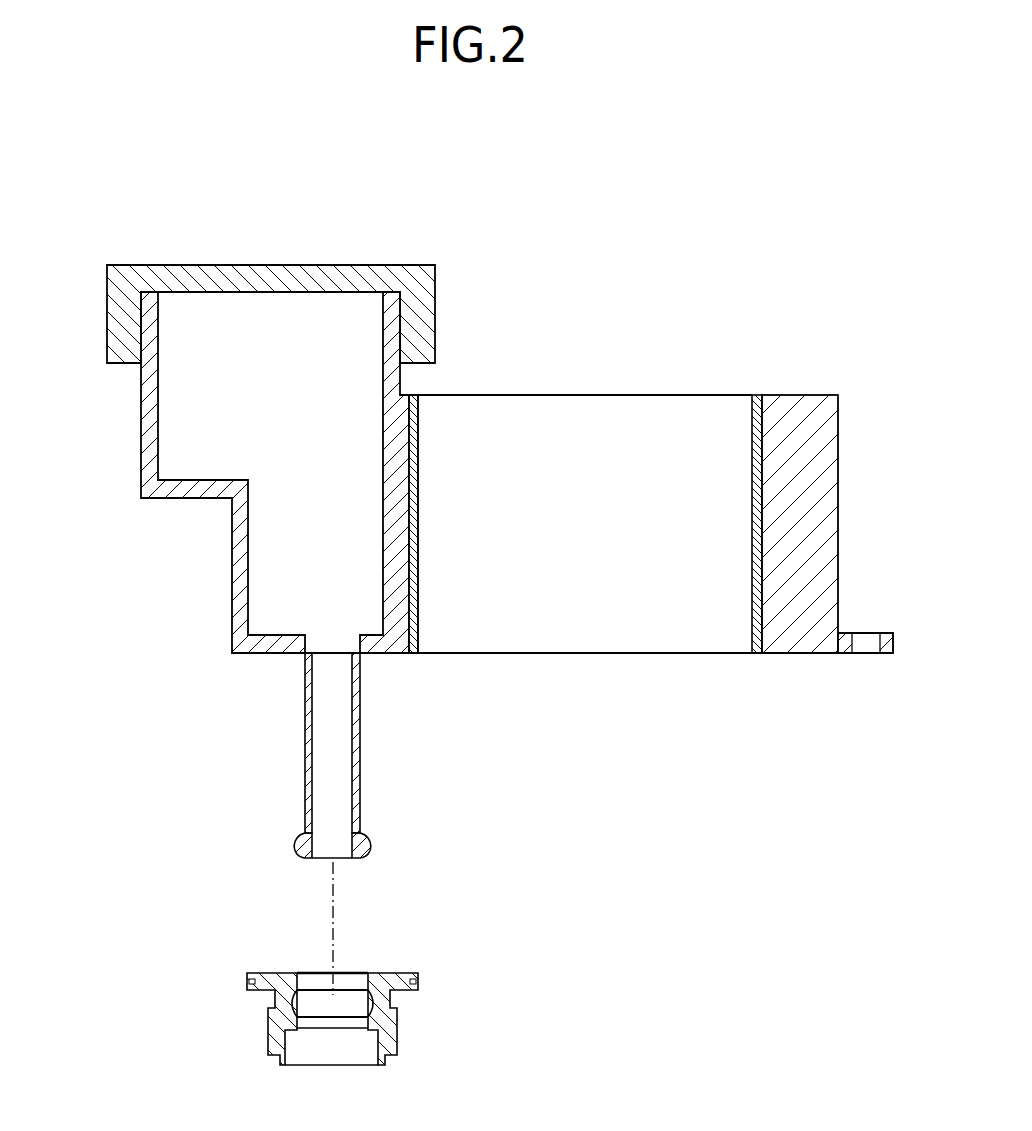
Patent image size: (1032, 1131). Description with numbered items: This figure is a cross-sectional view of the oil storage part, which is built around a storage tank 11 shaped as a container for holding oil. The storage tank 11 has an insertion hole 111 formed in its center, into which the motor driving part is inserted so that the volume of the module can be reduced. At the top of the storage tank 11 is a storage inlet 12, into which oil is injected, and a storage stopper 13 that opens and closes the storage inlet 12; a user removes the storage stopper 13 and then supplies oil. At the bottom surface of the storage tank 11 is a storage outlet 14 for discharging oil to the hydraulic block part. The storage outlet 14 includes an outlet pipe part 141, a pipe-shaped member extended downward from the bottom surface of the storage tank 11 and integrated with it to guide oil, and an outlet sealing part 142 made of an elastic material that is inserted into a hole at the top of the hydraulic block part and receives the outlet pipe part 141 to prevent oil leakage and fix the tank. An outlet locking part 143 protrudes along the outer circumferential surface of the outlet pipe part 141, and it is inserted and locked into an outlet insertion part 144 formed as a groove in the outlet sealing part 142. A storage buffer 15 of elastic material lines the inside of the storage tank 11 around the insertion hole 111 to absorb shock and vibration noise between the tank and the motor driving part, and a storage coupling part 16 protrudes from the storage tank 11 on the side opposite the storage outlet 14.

The storage tank 11 is at (803, 402).
The insertion hole 111 is at (553, 613).
The storage inlet 12 is at (140, 457).
The storage stopper 13 is at (318, 266).
The storage outlet 14 is at (102, 813).
The outlet pipe part 141 is at (305, 805).
The outlet sealing part 142 is at (267, 1040).
The outlet locking part 143 is at (295, 855).
The outlet insertion part 144 is at (308, 990).
The storage buffer 15 is at (757, 610).
The storage coupling part 16 is at (886, 633).